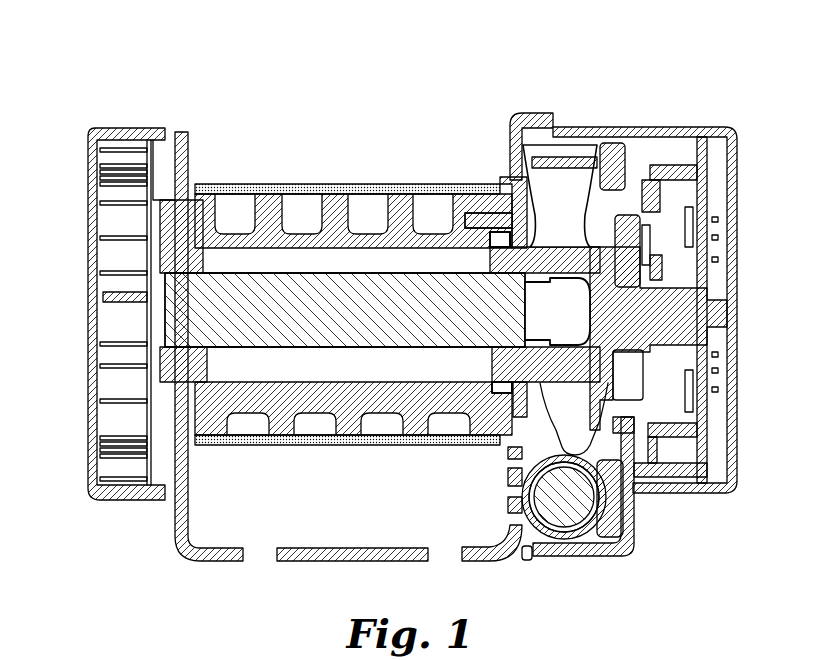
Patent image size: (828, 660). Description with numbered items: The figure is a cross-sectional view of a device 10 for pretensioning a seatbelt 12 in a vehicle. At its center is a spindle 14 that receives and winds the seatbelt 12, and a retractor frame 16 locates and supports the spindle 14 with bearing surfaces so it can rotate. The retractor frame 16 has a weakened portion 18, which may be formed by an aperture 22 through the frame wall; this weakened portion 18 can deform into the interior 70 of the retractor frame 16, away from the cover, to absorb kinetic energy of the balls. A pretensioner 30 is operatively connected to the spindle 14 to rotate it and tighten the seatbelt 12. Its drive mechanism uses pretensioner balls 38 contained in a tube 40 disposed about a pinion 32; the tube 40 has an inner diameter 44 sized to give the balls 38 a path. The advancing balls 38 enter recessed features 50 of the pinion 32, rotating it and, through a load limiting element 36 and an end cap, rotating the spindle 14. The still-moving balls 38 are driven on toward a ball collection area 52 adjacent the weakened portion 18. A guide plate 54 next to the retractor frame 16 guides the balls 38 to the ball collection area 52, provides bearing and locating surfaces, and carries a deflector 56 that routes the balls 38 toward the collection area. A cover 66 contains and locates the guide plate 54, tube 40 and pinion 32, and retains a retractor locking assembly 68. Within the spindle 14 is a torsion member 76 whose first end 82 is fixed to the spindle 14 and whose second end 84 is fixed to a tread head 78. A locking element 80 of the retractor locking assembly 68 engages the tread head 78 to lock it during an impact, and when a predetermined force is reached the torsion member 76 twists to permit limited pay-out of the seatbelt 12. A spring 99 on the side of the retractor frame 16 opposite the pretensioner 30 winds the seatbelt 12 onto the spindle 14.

The device 10 is at (640, 48).
The seatbelt 12 is at (300, 184).
The spindle 14 is at (340, 197).
The retractor frame 16 is at (177, 550).
The weakened portion 18 is at (512, 478).
The aperture 22 is at (512, 462).
The pretensioner 30 is at (645, 560).
The pinion 32 is at (613, 163).
The load limiting element 36 is at (500, 238).
The pretensioner balls 38 is at (565, 503).
The tube 40 is at (528, 545).
The inner diameter 44 is at (600, 498).
The recessed features 50 is at (548, 205).
The ball collection area 52 is at (567, 437).
The guide plate 54 is at (618, 515).
The deflector 56 is at (585, 156).
The cover 66 is at (640, 160).
The retractor locking assembly 68 is at (630, 268).
The interior 70 is at (326, 504).
The torsion member 76 is at (326, 322).
The tread head 78 is at (628, 310).
The locking element 80 is at (642, 232).
The first end 82 is at (147, 300).
The second end 84 is at (493, 302).
The spring 99 is at (120, 237).